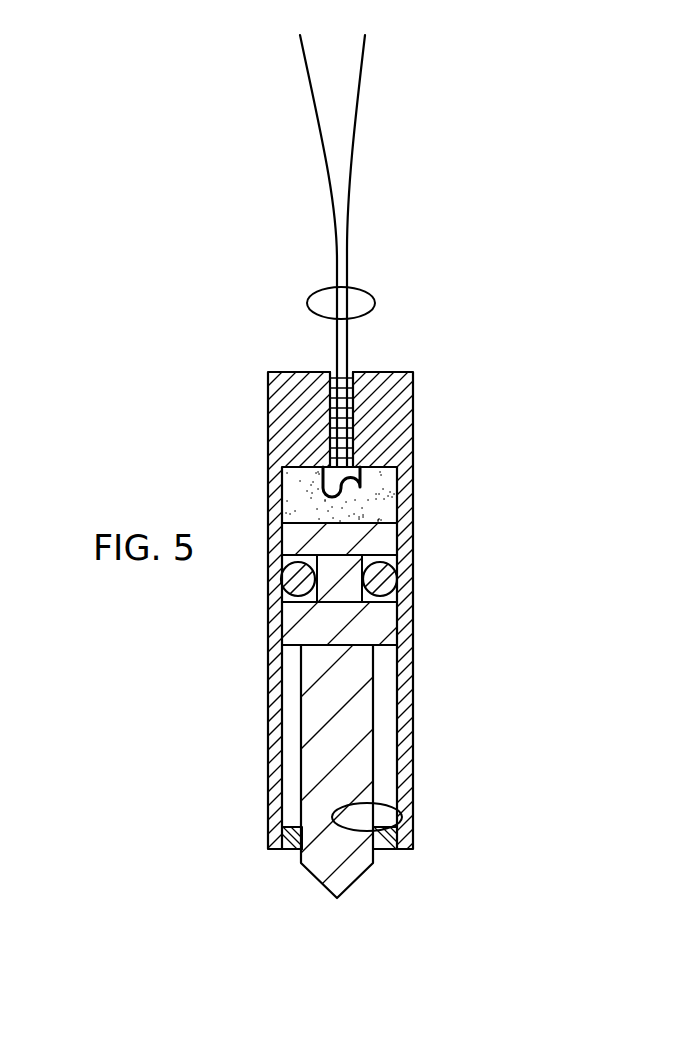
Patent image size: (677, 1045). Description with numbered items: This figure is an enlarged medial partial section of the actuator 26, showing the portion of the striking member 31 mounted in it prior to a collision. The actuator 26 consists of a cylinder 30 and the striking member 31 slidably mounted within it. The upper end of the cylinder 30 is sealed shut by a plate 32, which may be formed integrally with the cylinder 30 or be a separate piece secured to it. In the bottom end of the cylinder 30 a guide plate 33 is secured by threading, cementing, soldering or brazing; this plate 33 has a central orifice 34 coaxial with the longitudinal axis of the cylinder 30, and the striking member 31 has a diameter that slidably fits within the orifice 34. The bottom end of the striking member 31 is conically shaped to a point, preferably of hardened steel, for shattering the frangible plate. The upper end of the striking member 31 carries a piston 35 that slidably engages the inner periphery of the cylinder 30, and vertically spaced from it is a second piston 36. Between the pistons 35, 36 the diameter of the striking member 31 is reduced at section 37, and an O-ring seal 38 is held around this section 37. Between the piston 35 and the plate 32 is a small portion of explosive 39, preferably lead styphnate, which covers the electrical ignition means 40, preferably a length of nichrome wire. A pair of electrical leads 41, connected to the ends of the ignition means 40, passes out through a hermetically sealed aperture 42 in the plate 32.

The actuator 26 is at (437, 683).
The cylinder 30 is at (413, 708).
The striking member 31 is at (373, 782).
The plate 32 is at (363, 370).
The plate 33 is at (375, 848).
The central orifice 34 is at (402, 822).
The piston 35 is at (400, 544).
The second piston 36 is at (400, 633).
The reduced diameter section 37 is at (397, 575).
The O-ring seal 38 is at (397, 597).
The explosive 39 is at (385, 506).
The electrical ignition means 40 is at (360, 476).
The electrical leads 41 is at (375, 303).
The hermetically sealed aperture 42 is at (350, 409).